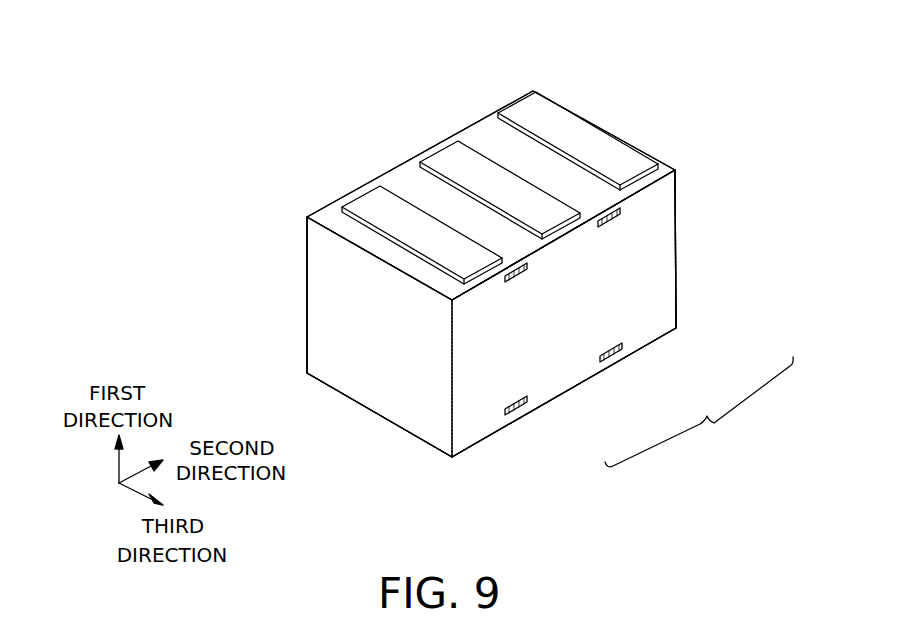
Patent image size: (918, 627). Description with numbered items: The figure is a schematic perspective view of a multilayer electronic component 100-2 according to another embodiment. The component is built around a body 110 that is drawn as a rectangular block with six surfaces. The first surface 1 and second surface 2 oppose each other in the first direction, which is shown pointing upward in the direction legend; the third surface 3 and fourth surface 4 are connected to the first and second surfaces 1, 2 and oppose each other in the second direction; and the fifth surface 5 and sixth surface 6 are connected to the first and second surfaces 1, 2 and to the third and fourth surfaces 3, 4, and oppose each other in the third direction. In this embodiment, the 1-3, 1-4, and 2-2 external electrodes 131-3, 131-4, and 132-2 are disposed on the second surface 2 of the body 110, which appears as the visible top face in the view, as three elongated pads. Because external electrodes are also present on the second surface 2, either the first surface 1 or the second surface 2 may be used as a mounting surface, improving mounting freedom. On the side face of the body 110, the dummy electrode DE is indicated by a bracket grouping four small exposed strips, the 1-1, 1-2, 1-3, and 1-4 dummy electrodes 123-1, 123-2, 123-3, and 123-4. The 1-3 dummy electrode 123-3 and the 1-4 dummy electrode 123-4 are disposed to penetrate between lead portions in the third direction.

The multilayer electronic component 100-2 is at (277, 44).
The body 110 is at (563, 175).
The first surface 1 is at (489, 456).
The second surface 2 is at (325, 200).
The third surface 3 is at (368, 385).
The fourth surface 4 is at (690, 195).
The fifth surface 5 is at (294, 272).
The sixth surface 6 is at (682, 261).
The 1-3 external electrode 131-3 is at (378, 198).
The 1-4 external electrode 131-4 is at (535, 108).
The 2-2 external electrode 132-2 is at (456, 155).
The dummy electrode 123-1 is at (527, 406).
The dummy electrode 123-2 is at (622, 352).
The 1-3 dummy electrode 123-3 is at (528, 276).
The 1-4 dummy electrode 123-4 is at (623, 222).
The dummy electrode DE is at (699, 412).